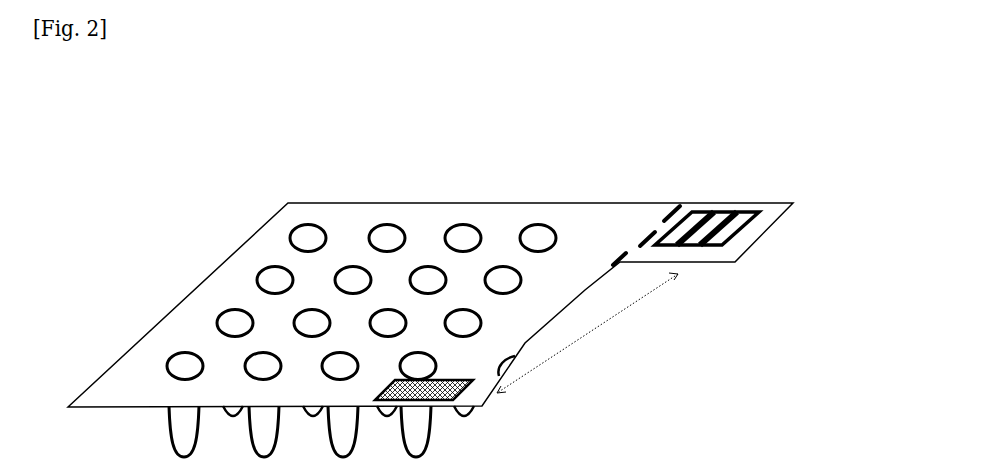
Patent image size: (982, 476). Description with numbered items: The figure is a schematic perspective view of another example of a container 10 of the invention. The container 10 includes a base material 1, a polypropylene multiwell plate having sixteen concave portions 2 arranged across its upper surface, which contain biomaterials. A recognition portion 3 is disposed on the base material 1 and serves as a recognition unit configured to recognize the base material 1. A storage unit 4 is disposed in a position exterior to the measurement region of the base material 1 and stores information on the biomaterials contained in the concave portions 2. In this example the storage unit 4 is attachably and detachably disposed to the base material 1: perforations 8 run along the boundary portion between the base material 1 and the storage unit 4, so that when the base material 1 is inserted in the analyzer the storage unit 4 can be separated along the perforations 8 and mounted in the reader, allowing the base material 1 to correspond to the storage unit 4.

The base material 1 is at (573, 205).
The concave portions 2 is at (457, 204).
The recognition portion 3 is at (478, 398).
The storage unit 4 is at (732, 233).
The perforations 8 is at (677, 206).
The container 10 is at (640, 153).